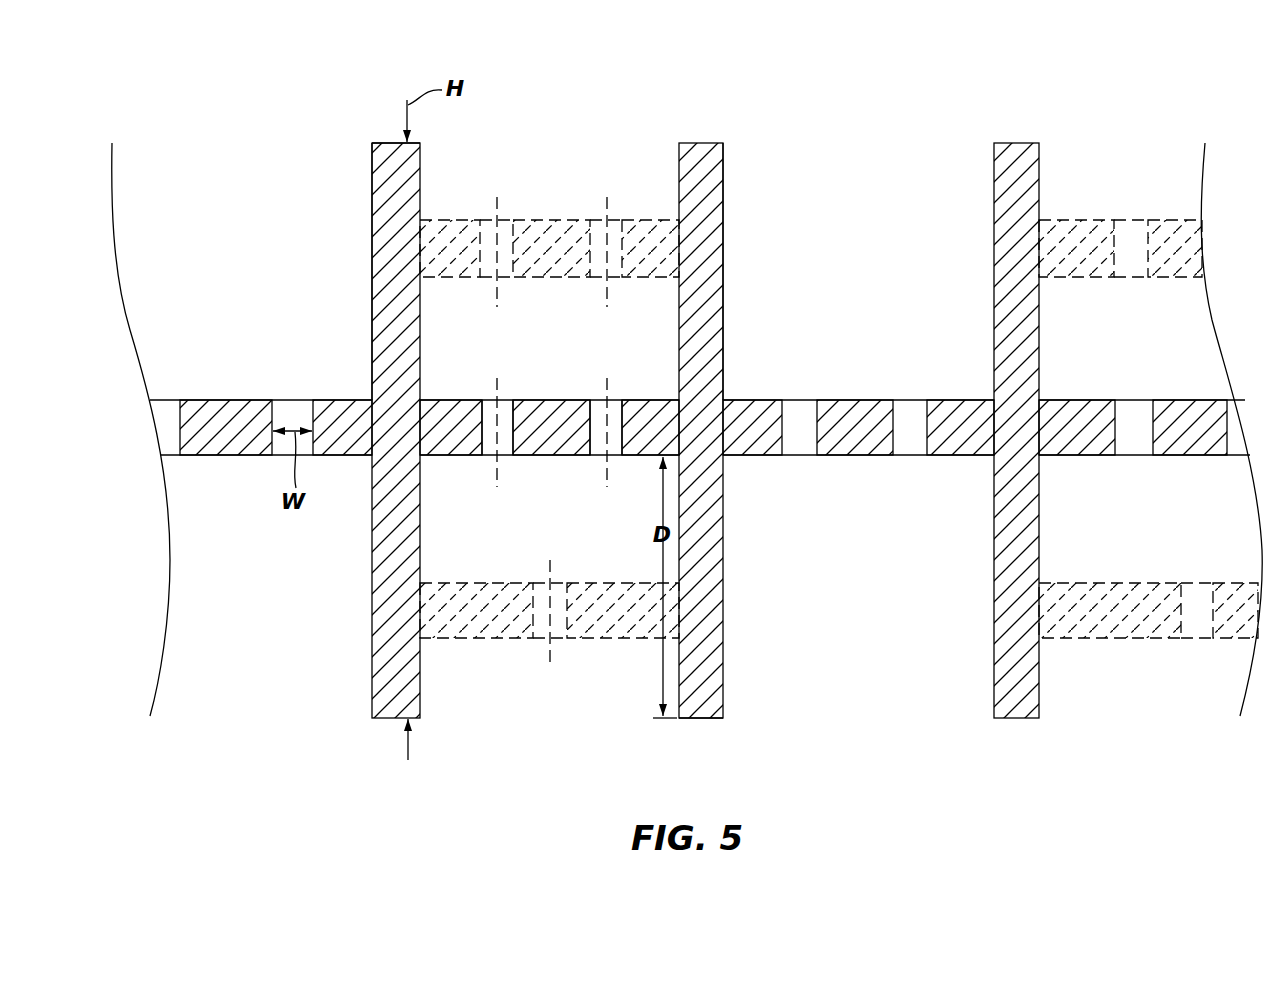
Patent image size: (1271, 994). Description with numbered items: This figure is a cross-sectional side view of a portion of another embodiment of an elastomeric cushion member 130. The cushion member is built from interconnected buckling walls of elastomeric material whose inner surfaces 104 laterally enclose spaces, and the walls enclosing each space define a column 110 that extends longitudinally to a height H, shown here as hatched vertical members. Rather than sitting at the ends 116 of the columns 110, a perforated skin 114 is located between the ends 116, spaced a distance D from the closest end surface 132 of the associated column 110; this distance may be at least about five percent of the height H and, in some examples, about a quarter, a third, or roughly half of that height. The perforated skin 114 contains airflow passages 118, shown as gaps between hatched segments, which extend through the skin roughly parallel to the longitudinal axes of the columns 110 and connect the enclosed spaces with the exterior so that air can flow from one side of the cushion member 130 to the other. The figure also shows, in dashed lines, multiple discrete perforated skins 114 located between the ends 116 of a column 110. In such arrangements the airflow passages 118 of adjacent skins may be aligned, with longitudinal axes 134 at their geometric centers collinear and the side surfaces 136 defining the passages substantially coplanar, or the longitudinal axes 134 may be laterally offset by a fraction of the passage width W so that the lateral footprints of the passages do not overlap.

The inner surfaces 104 is at (370, 325).
The column 110 is at (734, 238).
The perforated skin 114 is at (645, 235).
The ends 116 is at (391, 128).
The airflow passages 118 is at (488, 237).
The elastomeric cushion member 130 is at (296, 160).
The end surface 132 is at (699, 134).
The longitudinal axes 134 is at (498, 200).
The side surfaces 136 is at (597, 410).